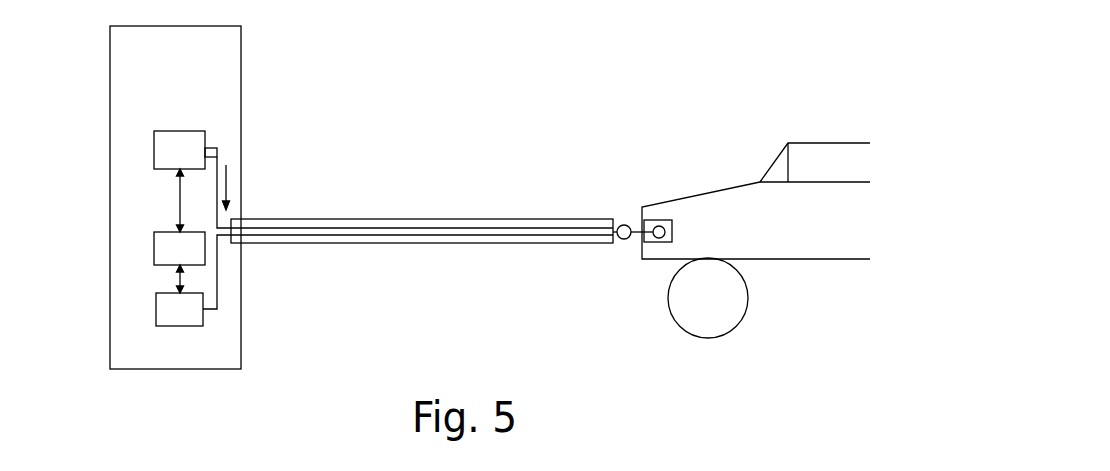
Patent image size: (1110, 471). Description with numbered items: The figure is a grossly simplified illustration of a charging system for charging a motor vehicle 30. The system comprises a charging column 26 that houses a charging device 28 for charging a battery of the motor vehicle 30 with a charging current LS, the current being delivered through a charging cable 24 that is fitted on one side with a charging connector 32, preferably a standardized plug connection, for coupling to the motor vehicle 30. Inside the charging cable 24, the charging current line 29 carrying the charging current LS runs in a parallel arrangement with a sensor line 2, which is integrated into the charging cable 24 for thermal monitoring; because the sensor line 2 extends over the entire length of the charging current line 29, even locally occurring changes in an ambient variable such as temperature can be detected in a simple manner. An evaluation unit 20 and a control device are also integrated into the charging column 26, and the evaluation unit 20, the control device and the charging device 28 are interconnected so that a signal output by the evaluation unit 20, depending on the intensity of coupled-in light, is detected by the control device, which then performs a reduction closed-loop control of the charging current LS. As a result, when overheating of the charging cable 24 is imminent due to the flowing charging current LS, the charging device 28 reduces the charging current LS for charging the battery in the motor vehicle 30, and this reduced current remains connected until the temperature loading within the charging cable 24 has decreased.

The sensor line 2 is at (218, 270).
The evaluation unit 20 is at (162, 310).
The charging cable 24 is at (468, 219).
The charging column 26 is at (125, 82).
The charging device 28 is at (162, 145).
The charging current line 29 is at (217, 155).
The motor vehicle 30 is at (718, 210).
The charging connector 32 is at (624, 240).
The charging current LS is at (232, 193).